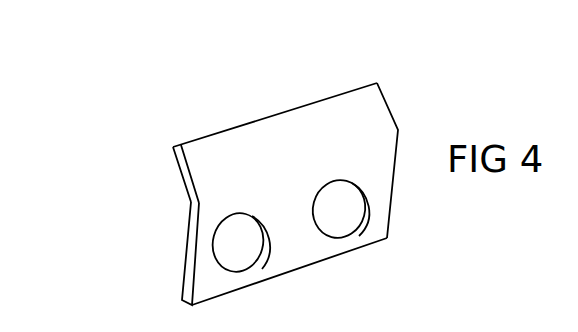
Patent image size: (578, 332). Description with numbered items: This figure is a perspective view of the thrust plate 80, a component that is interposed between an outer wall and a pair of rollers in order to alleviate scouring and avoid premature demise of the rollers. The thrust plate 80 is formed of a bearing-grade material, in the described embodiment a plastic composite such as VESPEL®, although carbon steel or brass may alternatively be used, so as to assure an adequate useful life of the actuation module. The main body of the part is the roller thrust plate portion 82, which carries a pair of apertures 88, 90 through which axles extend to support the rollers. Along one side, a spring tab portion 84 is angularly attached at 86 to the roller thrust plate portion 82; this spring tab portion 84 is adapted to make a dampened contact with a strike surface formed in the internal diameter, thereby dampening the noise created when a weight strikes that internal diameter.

The thrust plate 80 is at (300, 201).
The roller thrust plate portion 82 is at (185, 268).
The spring tab portion 84 is at (188, 196).
The angular attachment 86 is at (400, 128).
The aperture 88 is at (238, 262).
The aperture 90 is at (340, 226).